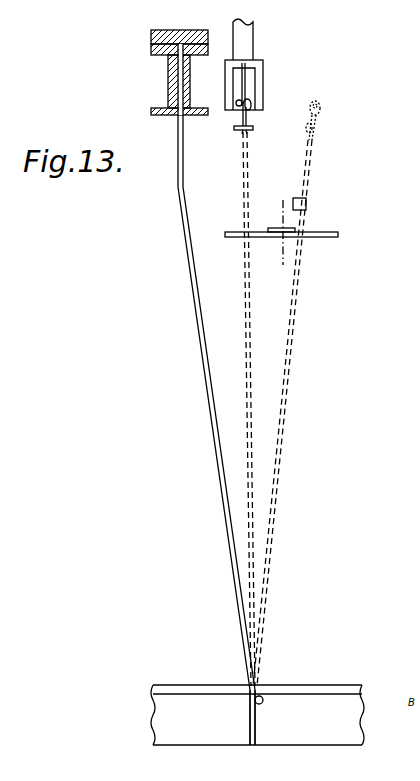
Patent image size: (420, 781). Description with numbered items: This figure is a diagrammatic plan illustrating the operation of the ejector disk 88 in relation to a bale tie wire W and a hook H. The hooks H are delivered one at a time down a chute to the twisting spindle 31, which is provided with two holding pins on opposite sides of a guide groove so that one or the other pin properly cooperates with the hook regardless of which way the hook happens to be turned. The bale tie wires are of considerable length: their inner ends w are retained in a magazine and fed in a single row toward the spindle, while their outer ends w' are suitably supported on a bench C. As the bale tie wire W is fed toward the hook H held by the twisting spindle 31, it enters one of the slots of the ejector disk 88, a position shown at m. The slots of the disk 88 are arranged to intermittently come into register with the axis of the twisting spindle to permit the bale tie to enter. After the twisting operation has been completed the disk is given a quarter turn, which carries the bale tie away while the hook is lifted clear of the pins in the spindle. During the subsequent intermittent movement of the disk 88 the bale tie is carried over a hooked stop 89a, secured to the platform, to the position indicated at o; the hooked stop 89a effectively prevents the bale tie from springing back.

The inner ends of bale tie wires w is at (163, 72).
The bale tie wire W is at (207, 400).
The twisting spindle 31 is at (260, 76).
The bale tie position in disk slot m is at (233, 409).
The hook H is at (320, 118).
The bale tie position over hooked stop o is at (305, 165).
The hooked stop 89a is at (306, 202).
The ejector disk 88 is at (338, 236).
The bench C is at (163, 712).
The outer ends of bale tie wires w' is at (235, 717).